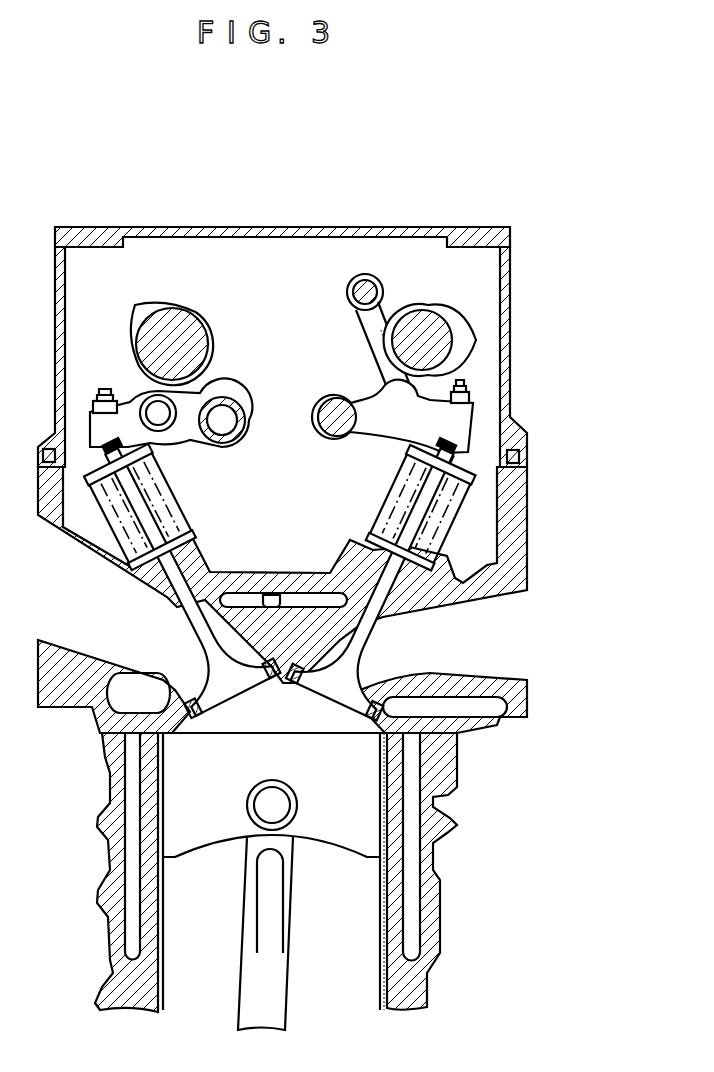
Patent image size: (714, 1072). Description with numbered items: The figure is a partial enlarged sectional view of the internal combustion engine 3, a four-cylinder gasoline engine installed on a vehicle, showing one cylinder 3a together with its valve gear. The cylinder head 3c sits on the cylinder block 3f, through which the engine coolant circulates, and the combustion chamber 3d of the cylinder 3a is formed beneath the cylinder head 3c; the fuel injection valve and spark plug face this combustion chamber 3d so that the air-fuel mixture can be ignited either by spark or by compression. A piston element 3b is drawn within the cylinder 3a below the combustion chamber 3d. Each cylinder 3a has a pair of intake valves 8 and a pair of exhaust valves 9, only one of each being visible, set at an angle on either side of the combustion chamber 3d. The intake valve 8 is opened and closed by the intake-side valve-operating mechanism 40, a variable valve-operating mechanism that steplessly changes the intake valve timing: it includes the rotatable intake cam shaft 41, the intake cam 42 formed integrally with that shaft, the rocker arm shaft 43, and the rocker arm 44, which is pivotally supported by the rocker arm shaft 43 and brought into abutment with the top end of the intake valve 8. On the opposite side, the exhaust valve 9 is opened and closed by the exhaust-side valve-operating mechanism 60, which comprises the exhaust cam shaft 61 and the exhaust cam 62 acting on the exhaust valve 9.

The internal combustion engine 3 is at (480, 222).
The cylinder 3a is at (163, 930).
The piston 3b is at (320, 843).
The cylinder head 3c is at (527, 505).
The combustion chamber 3d is at (237, 726).
The cylinder block 3f is at (433, 847).
The intake valve 8 is at (203, 660).
The exhaust valve 9 is at (357, 660).
The intake-side valve-operating mechanism 40 is at (80, 331).
The intake cam shaft 41 is at (186, 325).
The intake cam 42 is at (160, 296).
The rocker arm shaft 43 is at (238, 405).
The rocker arm 44 is at (187, 443).
The exhaust-side valve-operating mechanism 60 is at (492, 378).
The exhaust cam shaft 61 is at (408, 320).
The exhaust cam 62 is at (455, 318).